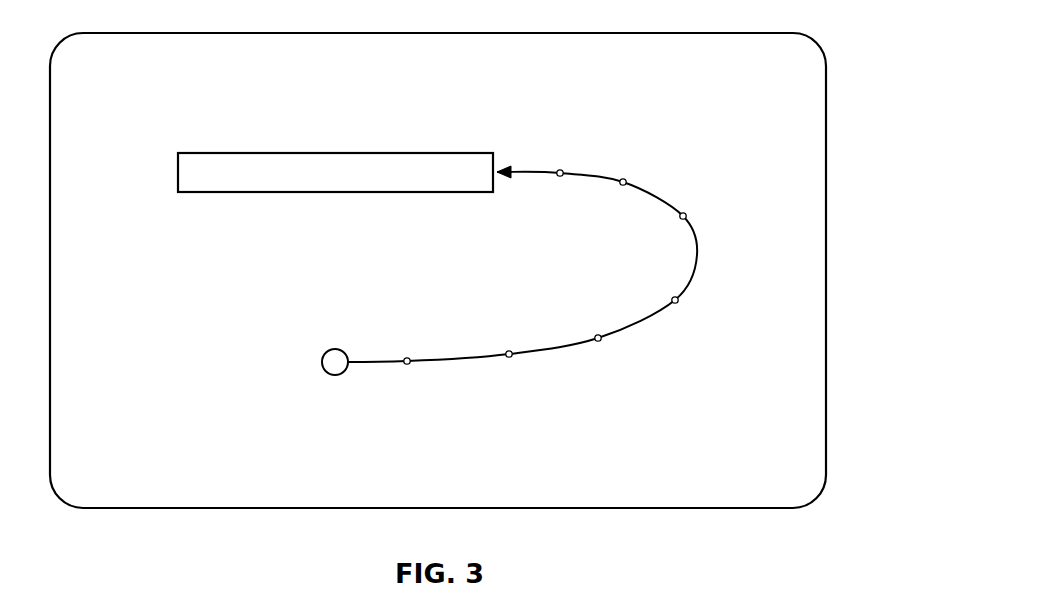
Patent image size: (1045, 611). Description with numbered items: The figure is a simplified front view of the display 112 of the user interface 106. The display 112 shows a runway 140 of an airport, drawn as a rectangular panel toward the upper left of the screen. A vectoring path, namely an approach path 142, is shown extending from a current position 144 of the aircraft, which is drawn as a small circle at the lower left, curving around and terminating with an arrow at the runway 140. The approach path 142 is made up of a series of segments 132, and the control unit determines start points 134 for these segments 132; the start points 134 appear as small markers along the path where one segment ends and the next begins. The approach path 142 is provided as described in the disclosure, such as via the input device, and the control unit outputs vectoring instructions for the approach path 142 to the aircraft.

The user interface 106 is at (788, 33).
The display 112 is at (808, 410).
The runway 140 is at (335, 153).
The current position 144 is at (322, 360).
The segments 132 is at (527, 176).
The start points 134 is at (562, 170).
The approach path 142 is at (706, 251).